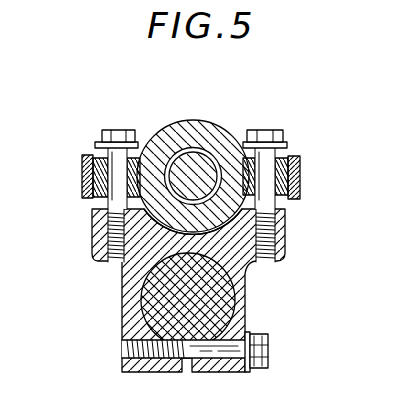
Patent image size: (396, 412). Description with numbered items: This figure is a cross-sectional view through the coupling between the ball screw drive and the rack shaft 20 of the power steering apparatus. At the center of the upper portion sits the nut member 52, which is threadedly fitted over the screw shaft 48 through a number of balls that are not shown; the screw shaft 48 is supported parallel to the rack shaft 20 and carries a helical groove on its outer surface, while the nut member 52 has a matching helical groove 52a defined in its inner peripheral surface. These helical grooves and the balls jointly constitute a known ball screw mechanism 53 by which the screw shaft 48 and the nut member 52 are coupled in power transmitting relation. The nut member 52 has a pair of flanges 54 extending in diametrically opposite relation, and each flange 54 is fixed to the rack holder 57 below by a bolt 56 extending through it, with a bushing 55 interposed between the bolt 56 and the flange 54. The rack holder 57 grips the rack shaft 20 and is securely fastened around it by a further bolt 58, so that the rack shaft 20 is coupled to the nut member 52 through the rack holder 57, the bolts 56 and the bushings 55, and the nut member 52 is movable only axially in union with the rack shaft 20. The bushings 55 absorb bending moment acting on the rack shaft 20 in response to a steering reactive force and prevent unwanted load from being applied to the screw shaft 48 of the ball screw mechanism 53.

The rack shaft 20 is at (207, 300).
The screw shaft 48 is at (203, 189).
The nut member 52 is at (188, 135).
The helical groove 52a is at (208, 148).
The ball screw mechanism 53 is at (159, 114).
The flange 54 is at (81, 176).
The bushing 55 is at (97, 158).
The bolt 56 is at (117, 130).
The rack holder 57 is at (133, 268).
The bolt 58 is at (268, 350).